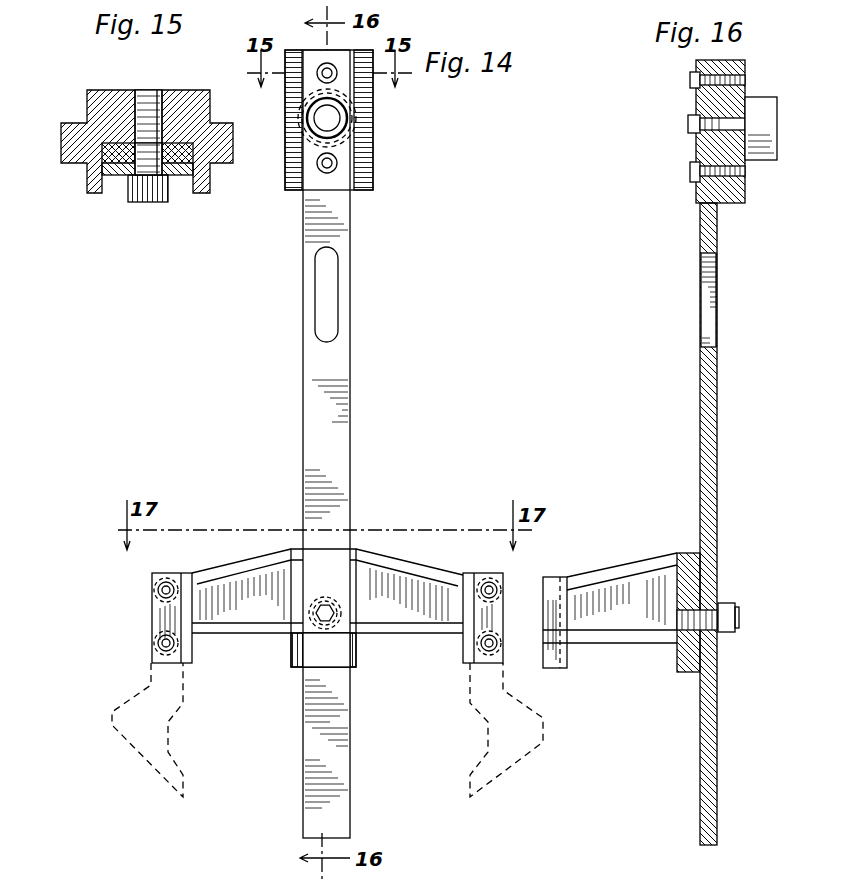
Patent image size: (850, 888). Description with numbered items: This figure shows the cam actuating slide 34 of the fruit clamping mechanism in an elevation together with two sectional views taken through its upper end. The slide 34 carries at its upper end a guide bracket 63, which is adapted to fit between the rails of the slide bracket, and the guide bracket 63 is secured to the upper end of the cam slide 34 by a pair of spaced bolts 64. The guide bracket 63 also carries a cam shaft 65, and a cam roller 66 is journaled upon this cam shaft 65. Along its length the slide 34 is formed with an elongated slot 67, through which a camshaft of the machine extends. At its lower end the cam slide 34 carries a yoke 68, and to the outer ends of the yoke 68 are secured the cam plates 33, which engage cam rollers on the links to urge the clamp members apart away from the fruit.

In FIG. 14, the cam plates 33 is at (150, 760).
In FIG. 15, the cam actuating slide 34 is at (120, 176).
In FIG. 14, the cam actuating slide 34 is at (343, 428).
In FIG. 16, the cam actuating slide 34 is at (717, 478).
In FIG. 15, the guide bracket 63 is at (61, 150).
In FIG. 14, the guide bracket 63 is at (373, 155).
In FIG. 16, the guide bracket 63 is at (742, 132).
In FIG. 15, the bolts 64 is at (158, 202).
In FIG. 14, the bolts 64 is at (328, 72).
In FIG. 16, the bolts 64 is at (690, 80).
In FIG. 14, the cam shaft 65 is at (330, 118).
In FIG. 16, the cam shaft 65 is at (688, 127).
In FIG. 14, the cam roller 66 is at (308, 146).
In FIG. 16, the cam roller 66 is at (760, 108).
In FIG. 14, the elongated slot 67 is at (330, 300).
In FIG. 16, the elongated slot 67 is at (716, 327).
In FIG. 14, the yoke 68 is at (443, 590).
In FIG. 16, the yoke 68 is at (612, 578).